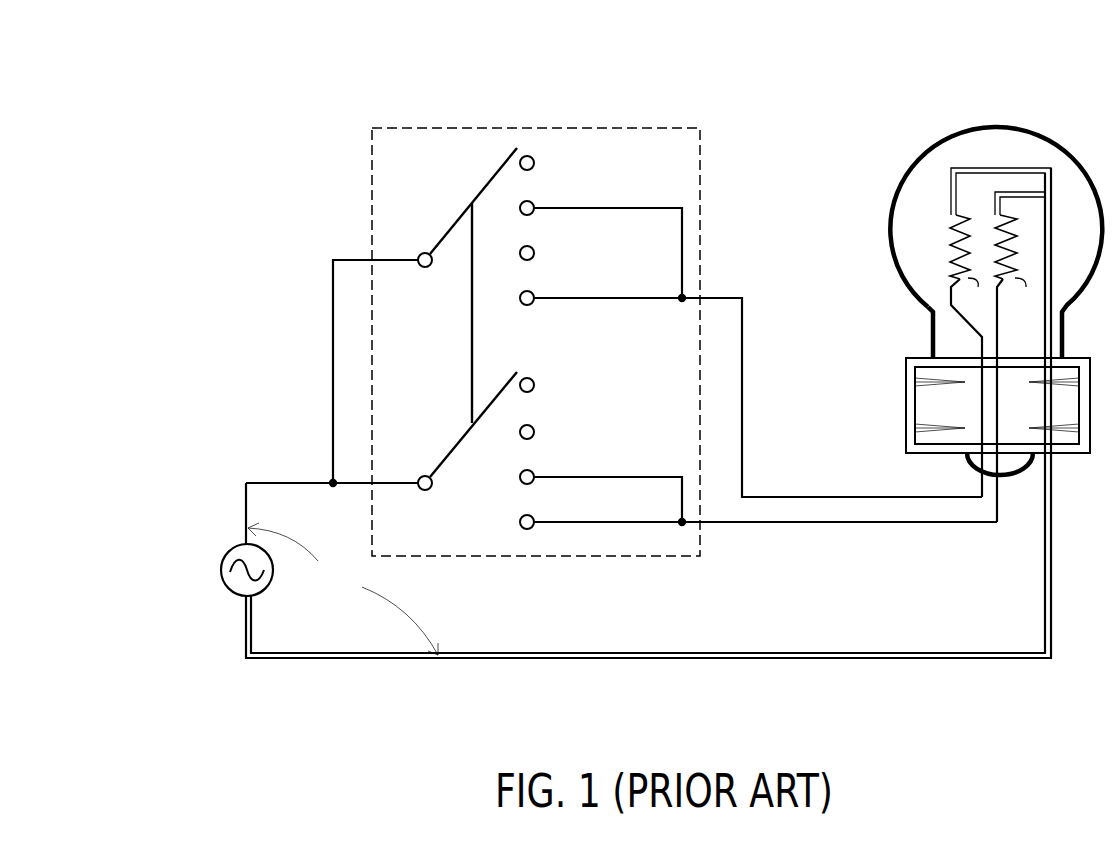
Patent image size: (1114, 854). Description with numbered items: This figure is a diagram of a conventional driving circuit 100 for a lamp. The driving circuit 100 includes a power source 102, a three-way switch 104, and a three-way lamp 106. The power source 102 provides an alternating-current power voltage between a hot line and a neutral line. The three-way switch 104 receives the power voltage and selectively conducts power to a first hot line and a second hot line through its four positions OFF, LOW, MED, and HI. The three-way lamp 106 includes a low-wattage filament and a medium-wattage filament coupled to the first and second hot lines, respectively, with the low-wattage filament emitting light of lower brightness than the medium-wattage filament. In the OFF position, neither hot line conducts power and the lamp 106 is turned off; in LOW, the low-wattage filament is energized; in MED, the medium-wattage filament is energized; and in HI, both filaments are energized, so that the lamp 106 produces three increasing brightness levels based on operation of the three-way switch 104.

The driving circuit 100 is at (240, 121).
The power source 102 is at (246, 542).
The three-way switch 104 is at (408, 126).
The three-way lamp 106 is at (968, 128).